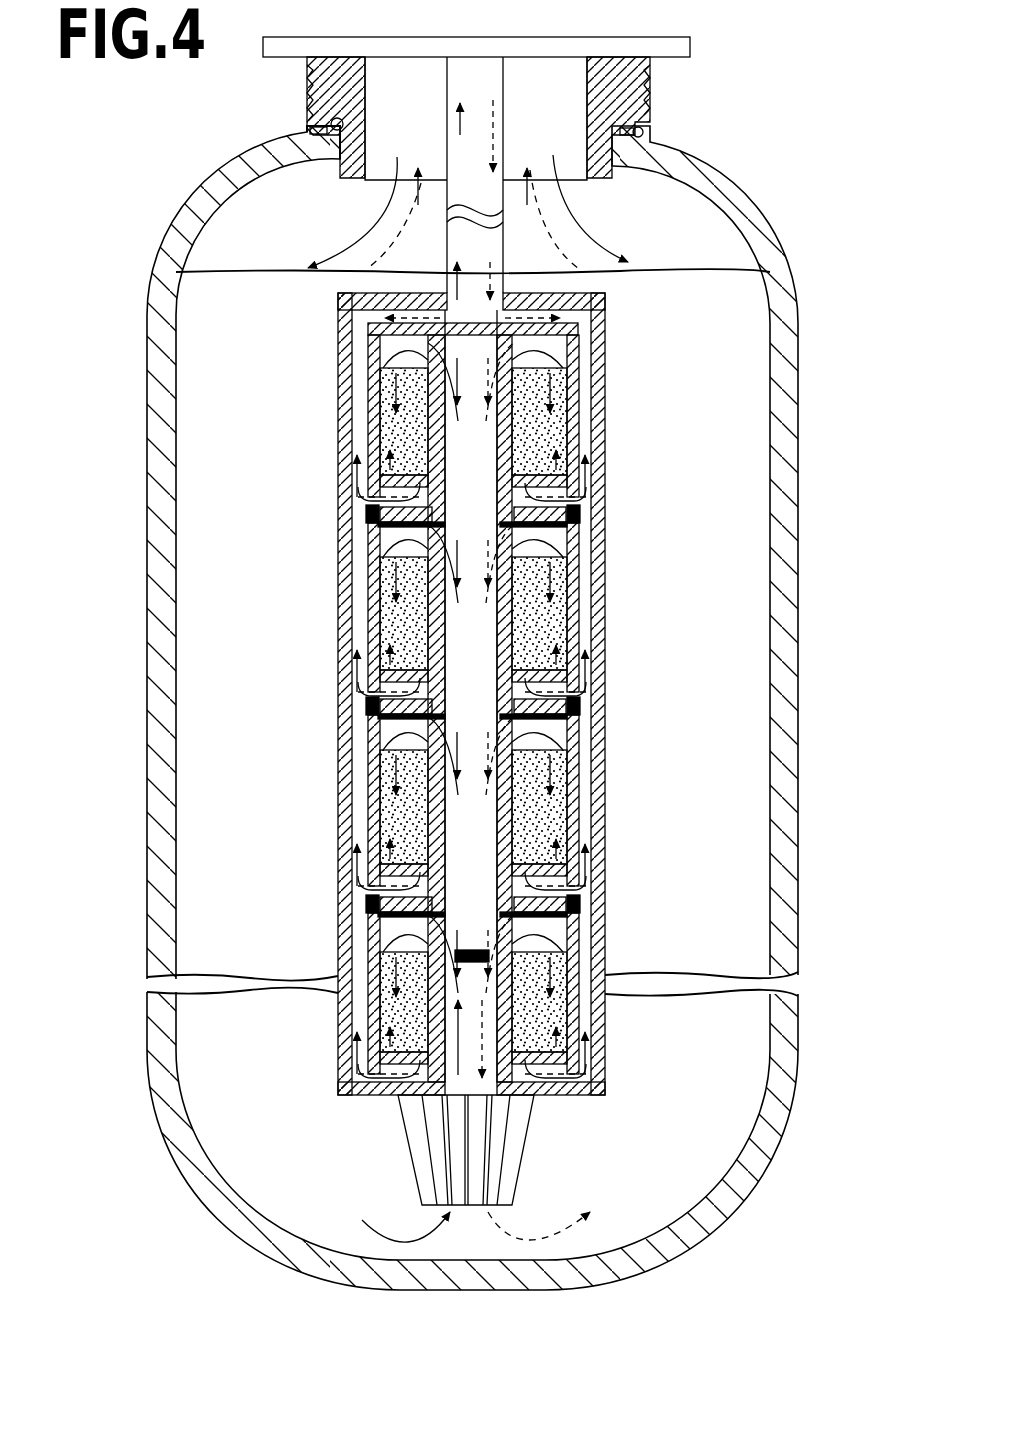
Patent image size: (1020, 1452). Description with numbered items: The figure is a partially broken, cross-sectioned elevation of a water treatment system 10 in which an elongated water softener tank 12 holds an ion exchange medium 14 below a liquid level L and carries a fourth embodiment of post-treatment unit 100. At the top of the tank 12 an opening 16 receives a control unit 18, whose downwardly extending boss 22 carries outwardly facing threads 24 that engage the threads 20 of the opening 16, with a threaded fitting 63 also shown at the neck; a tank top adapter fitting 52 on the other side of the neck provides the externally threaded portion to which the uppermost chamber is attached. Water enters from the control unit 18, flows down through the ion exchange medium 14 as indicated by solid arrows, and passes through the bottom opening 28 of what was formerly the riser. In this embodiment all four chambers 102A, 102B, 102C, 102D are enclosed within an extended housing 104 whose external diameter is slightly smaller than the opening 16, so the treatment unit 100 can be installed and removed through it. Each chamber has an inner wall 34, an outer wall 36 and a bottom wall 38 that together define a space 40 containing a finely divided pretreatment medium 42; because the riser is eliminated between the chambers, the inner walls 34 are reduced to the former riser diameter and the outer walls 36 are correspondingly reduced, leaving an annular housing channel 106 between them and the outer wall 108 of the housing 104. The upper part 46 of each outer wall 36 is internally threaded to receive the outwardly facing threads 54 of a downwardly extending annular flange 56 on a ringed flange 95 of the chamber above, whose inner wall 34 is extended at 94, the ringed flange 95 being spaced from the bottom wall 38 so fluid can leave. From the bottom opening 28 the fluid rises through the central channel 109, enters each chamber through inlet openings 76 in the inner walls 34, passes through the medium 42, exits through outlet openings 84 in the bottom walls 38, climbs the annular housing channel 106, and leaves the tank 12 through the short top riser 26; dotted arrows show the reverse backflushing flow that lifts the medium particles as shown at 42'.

The water treatment system 10 is at (507, 700).
The water softener tank 12 is at (798, 355).
The ion exchange media 14 is at (684, 855).
The opening 16 is at (340, 166).
The control unit 18 is at (690, 47).
The threads 20 is at (332, 127).
The boss 22 is at (370, 107).
The outwardly facing threads 24 is at (640, 98).
The riser 26 is at (462, 253).
The bottom opening 28 is at (476, 1205).
The inner wall 34 is at (447, 479).
The outer wall 36 is at (370, 374).
The bottom wall 38 is at (390, 452).
The space 40 is at (385, 414).
The pretreatment water treatment medium 42 is at (521, 710).
The lifted medium particles 42' is at (527, 644).
The upper part of outer wall 46 is at (390, 481).
The tank top adapter fitting 52 is at (657, 123).
The outwardly facing threads 54 is at (366, 512).
The annular flange 56 is at (400, 524).
The threaded fitting 63 is at (305, 64).
The inlet openings 76 is at (471, 668).
The outlet openings 84 is at (520, 510).
The inner wall extension 94 is at (452, 500).
The ringed flange 95 is at (380, 484).
The treatment unit 100 is at (520, 694).
The chamber 102A is at (595, 397).
The chamber 102B is at (600, 583).
The chamber 102C is at (595, 800).
The chamber 102D is at (590, 1040).
The extended housing 104 is at (590, 878).
The annular housing channel 106 is at (590, 630).
The outer wall of housing 108 is at (588, 693).
The channel 109 is at (490, 965).
The liquid level L is at (262, 272).